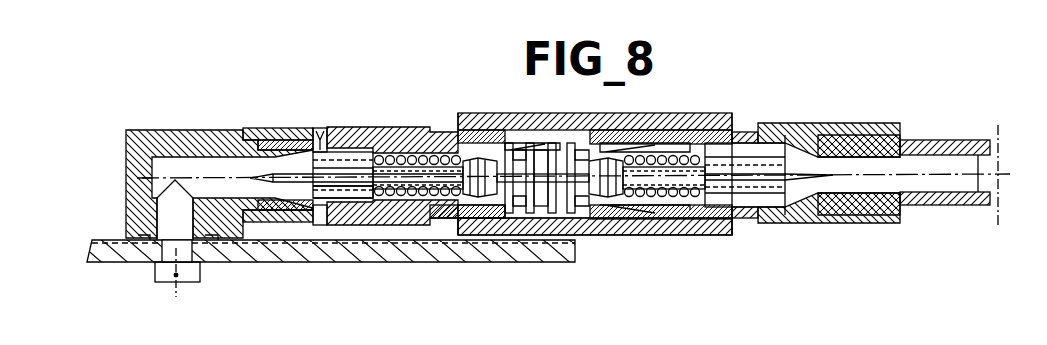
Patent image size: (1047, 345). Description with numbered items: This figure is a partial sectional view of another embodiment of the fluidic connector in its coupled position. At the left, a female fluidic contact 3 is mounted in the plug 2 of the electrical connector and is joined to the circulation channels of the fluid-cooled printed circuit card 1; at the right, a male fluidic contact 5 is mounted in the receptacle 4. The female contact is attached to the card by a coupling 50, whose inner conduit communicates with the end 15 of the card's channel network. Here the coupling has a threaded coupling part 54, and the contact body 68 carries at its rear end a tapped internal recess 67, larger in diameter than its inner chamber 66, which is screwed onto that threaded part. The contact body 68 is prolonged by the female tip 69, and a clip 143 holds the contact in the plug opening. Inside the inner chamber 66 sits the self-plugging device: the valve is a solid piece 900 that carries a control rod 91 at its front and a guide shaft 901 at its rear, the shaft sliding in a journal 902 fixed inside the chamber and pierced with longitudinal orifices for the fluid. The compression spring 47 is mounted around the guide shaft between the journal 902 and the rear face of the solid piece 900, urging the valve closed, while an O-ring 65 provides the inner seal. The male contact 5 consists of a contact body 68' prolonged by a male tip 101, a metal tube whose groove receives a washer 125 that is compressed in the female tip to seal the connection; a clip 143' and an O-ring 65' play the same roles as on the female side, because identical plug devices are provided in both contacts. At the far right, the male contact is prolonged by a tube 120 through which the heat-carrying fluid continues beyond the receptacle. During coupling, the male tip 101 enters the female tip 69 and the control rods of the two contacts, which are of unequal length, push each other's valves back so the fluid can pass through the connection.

The printed circuit card 1 is at (104, 262).
The plug 2 is at (504, 106).
The female fluidic contact 3 is at (412, 140).
The receptacle 4 is at (622, 236).
The male fluidic contact 5 is at (818, 124).
The end of the channel network 15 is at (155, 268).
The compression spring 47 is at (419, 188).
The coupling 50 is at (196, 135).
The threaded coupling part 54 is at (266, 140).
The O-ring 65 is at (481, 149).
The O-ring 65' is at (661, 152).
The inner chamber 66 is at (383, 156).
The tapped internal recess 67 is at (318, 140).
The contact body 68 is at (464, 257).
The contact body 68' is at (716, 209).
The female tip 69 is at (556, 200).
The control rod 91 is at (524, 198).
The male tip 101 is at (586, 215).
The tube 120 is at (928, 206).
The washer 125 is at (566, 210).
The clip 143 is at (547, 119).
The clip 143' is at (661, 209).
The solid piece 900 is at (486, 196).
The guide shaft 901 is at (379, 200).
The journal 902 is at (351, 152).